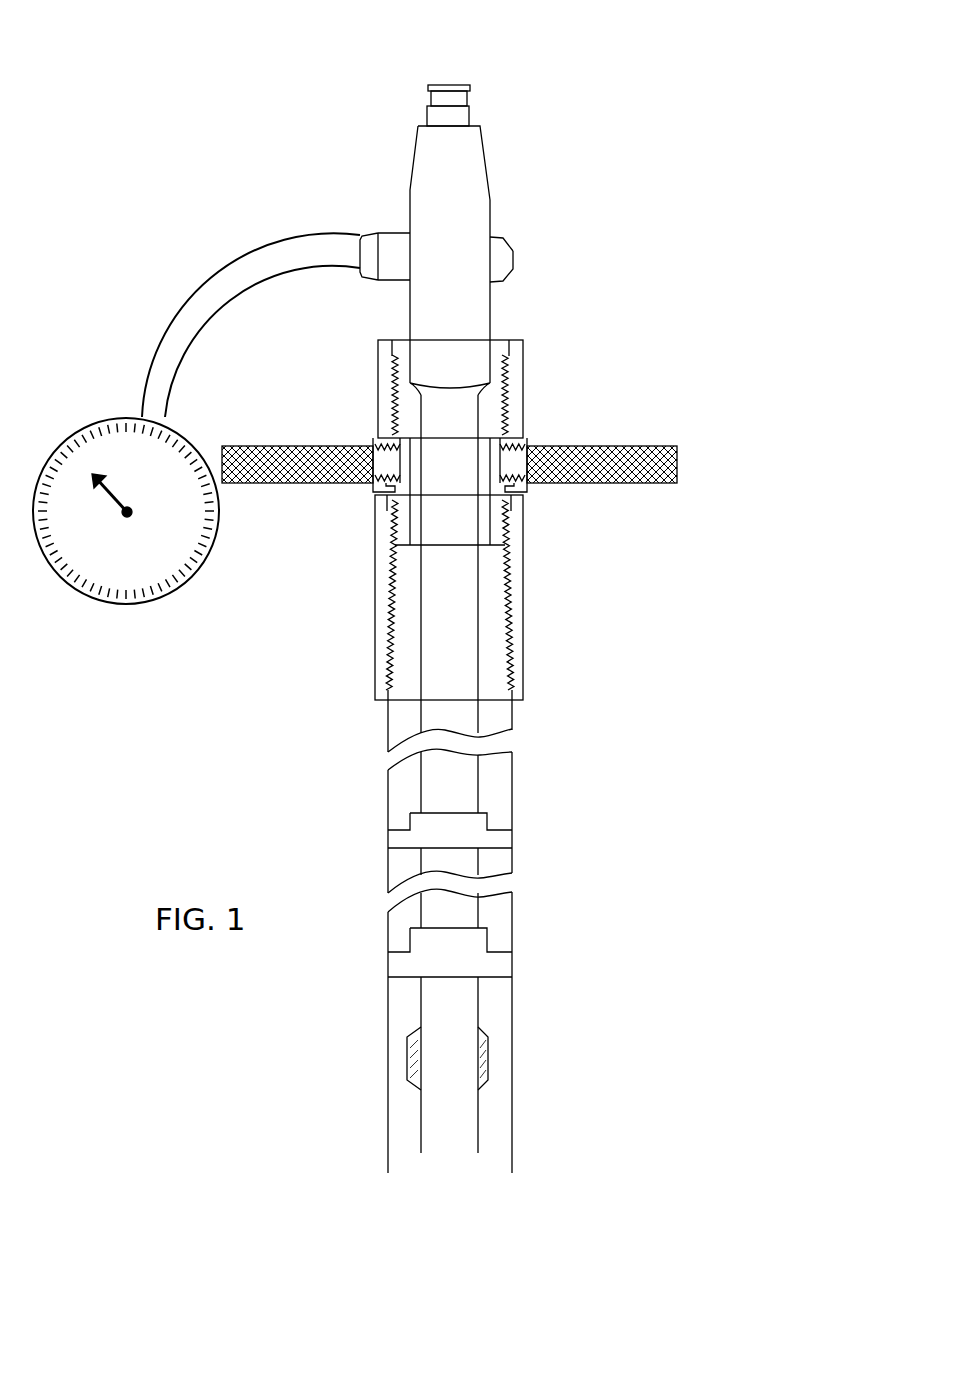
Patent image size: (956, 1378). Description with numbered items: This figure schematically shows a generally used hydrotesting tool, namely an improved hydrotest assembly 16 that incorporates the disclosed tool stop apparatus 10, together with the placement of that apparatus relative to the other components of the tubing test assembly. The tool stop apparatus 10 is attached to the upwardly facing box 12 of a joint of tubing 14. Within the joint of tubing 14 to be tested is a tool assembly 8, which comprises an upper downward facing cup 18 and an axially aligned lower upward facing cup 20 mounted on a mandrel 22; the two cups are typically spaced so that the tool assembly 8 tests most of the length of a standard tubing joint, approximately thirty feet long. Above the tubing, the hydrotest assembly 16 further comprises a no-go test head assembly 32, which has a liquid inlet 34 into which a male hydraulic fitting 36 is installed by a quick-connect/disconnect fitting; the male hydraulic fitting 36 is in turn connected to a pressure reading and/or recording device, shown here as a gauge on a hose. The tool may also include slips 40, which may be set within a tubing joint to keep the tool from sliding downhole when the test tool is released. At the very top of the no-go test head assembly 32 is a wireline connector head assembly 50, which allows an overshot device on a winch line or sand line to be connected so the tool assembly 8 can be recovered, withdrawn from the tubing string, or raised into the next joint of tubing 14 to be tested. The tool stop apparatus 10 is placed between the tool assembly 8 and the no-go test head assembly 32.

The wireline connector head assembly 50 is at (487, 88).
The hydrotest assembly 16 is at (517, 184).
The liquid inlet 34 is at (497, 232).
The male hydraulic fitting 36 is at (528, 256).
The no-go test head assembly 32 is at (504, 300).
The tool stop apparatus 10 is at (540, 397).
The upwardly facing box 12 is at (537, 546).
The joint of tubing 14 is at (378, 713).
The tool assembly 8 is at (480, 721).
The mandrel 22 is at (493, 793).
The upper downward facing cup 18 is at (517, 828).
The lower upward facing cup 20 is at (523, 960).
The slips 40 is at (490, 1055).